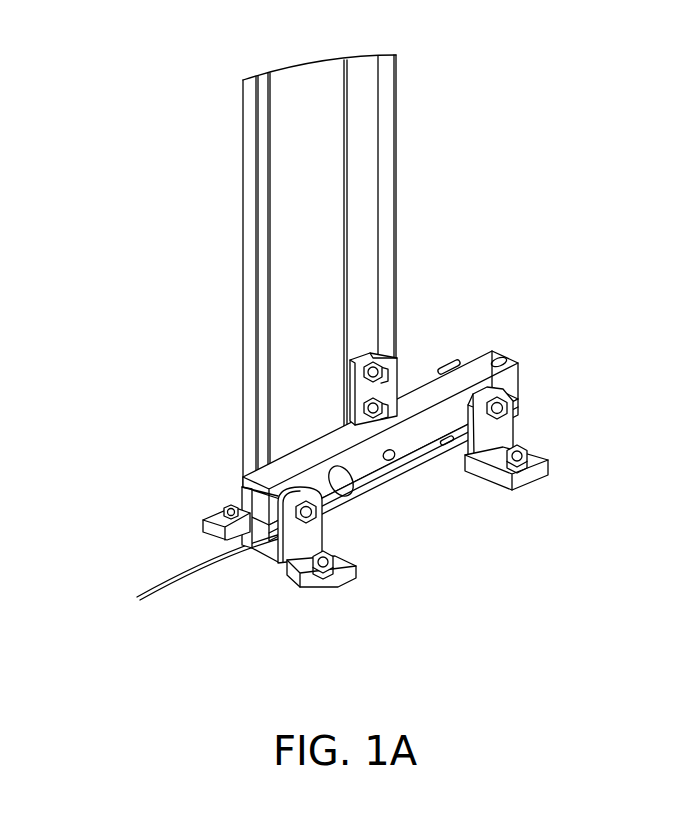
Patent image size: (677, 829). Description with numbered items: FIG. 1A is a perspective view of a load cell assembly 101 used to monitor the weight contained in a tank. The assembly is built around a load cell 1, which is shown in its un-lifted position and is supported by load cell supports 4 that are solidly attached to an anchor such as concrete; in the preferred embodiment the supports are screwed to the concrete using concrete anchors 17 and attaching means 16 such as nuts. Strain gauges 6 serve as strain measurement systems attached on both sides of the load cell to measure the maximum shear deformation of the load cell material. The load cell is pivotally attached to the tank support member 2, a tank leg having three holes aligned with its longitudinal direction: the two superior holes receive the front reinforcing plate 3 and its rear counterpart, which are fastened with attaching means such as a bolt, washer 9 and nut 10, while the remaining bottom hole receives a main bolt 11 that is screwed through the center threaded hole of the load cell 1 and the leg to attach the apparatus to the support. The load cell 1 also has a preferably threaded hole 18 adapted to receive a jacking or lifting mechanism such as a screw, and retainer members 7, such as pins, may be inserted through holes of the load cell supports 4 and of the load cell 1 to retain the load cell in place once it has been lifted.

The load cell assembly 101 is at (177, 152).
The load cell 1 is at (290, 477).
The tank support member 2 is at (363, 92).
The reinforcing plate 3 is at (381, 343).
The washer 9 is at (385, 354).
The nut 10 is at (396, 360).
The threaded hole 18 is at (503, 360).
The retainer member 7 is at (522, 381).
The load cell support 4 is at (541, 452).
The main bolt 11 is at (393, 457).
The strain gauge 6 is at (342, 481).
The attaching means 16 is at (320, 564).
The concrete anchor 17 is at (342, 588).